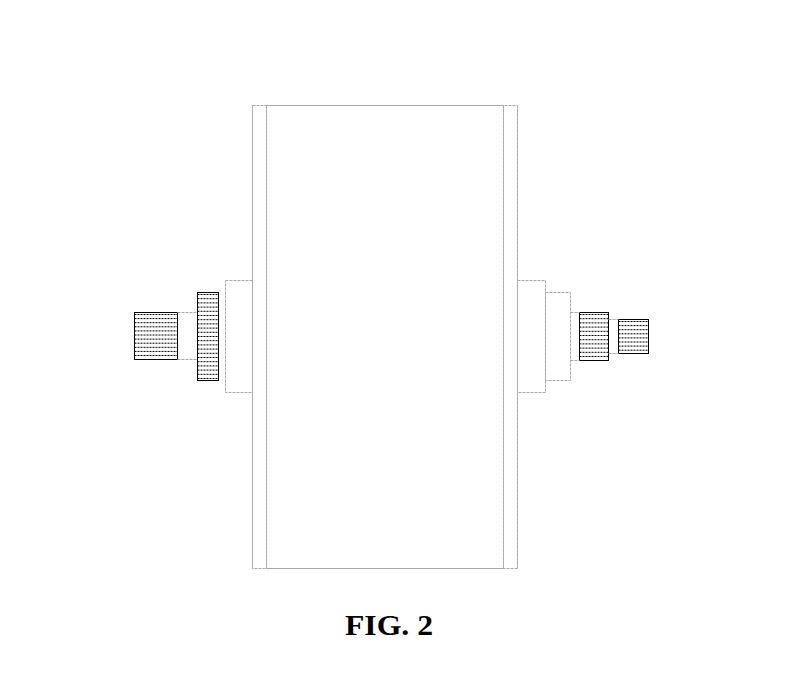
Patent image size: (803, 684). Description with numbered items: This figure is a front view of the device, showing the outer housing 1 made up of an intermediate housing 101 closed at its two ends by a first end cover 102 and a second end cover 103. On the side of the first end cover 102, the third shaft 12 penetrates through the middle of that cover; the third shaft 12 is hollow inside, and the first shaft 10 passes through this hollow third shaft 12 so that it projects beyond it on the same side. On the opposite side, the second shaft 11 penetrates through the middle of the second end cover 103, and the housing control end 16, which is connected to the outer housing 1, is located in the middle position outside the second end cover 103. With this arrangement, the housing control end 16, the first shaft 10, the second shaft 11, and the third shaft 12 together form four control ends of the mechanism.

The outer housing 1 is at (306, 102).
The intermediate housing 101 is at (411, 311).
The first end cover 102 is at (606, 311).
The second end cover 103 is at (172, 311).
The first shaft 10 is at (660, 292).
The second shaft 11 is at (120, 295).
The third shaft 12 is at (608, 295).
The housing control end 16 is at (168, 305).